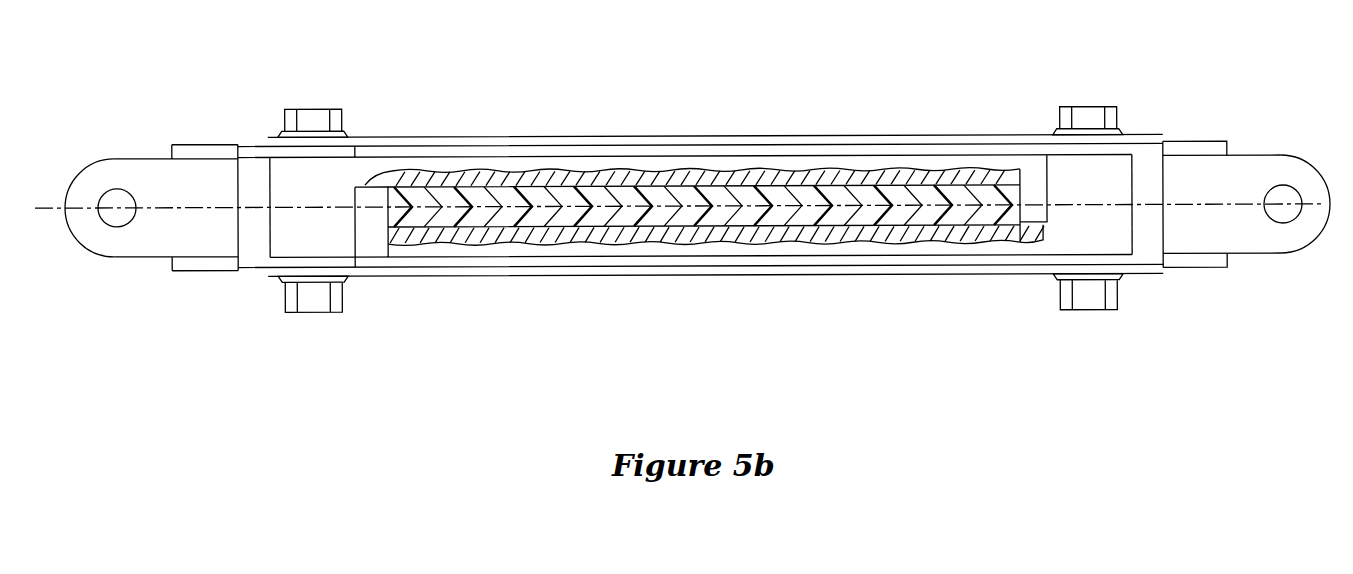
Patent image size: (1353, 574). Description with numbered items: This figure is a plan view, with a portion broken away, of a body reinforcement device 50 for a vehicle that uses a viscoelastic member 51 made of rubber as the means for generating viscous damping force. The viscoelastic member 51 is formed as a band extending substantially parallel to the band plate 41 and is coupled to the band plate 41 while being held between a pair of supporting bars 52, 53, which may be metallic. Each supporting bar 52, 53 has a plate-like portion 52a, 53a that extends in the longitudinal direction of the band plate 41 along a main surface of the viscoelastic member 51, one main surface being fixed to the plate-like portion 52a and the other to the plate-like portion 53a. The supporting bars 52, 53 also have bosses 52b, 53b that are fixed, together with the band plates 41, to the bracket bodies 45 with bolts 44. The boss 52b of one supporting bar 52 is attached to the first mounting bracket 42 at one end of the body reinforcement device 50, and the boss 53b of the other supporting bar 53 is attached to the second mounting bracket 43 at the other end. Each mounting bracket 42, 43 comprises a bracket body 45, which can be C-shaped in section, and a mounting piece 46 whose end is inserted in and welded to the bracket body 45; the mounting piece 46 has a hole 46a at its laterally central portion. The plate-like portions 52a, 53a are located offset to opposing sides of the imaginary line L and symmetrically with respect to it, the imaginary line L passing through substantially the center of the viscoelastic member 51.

The band plate 41 is at (975, 138).
The first mounting bracket 42 is at (1205, 273).
The second mounting bracket 43 is at (200, 273).
The bolt 44 is at (313, 108).
The bracket body 45 is at (1212, 147).
The mounting piece 46 is at (130, 258).
The hole 46a is at (113, 228).
The body reinforcement device 50 is at (922, 108).
The viscoelastic member 51 is at (852, 186).
The supporting bar 52 is at (988, 268).
The plate-like portion 52a is at (748, 248).
The boss 52b is at (1120, 222).
The supporting bar 53 is at (404, 138).
The plate-like portion 53a is at (745, 170).
The boss 53b is at (283, 192).
The imaginary line L is at (1193, 200).